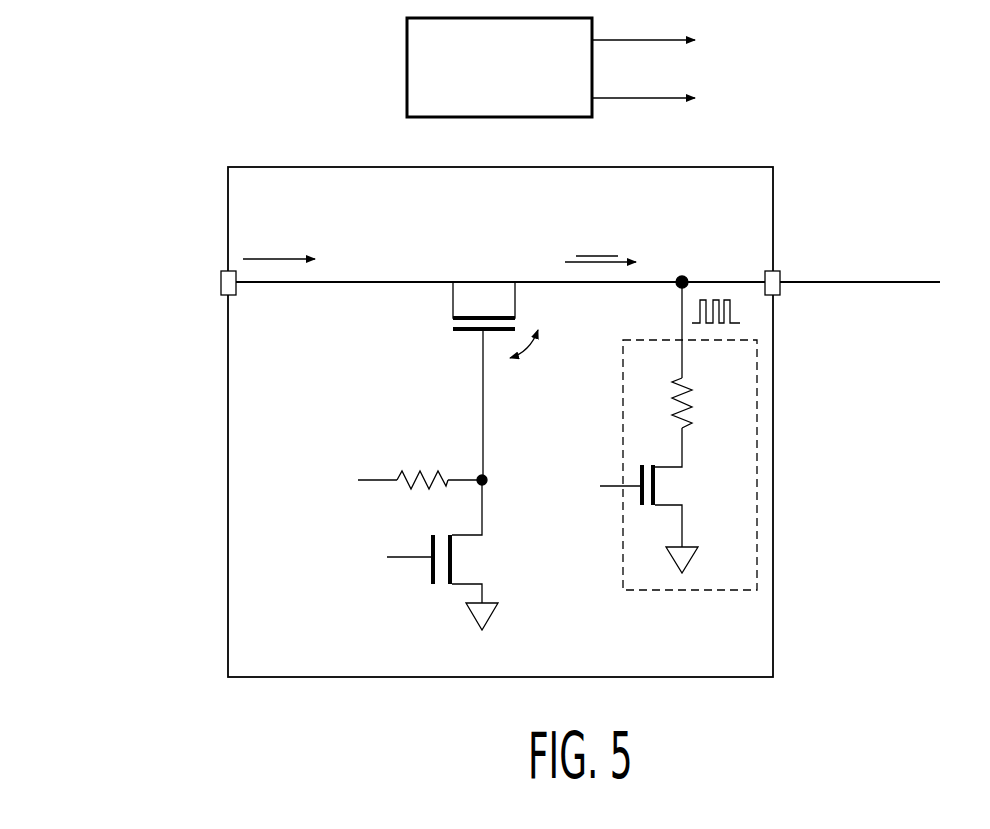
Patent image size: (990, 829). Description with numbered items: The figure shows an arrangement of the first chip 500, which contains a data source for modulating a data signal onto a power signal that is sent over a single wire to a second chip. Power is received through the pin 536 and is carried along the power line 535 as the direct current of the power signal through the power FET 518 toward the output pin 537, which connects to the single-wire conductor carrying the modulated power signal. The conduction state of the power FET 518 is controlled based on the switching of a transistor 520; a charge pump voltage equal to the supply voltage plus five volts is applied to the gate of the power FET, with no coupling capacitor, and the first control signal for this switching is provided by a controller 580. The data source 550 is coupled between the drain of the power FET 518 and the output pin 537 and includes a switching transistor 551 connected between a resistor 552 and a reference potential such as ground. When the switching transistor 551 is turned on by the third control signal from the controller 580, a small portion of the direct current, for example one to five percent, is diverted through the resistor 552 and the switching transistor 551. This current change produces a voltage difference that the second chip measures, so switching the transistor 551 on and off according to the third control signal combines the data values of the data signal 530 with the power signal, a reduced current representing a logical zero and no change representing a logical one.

The first chip 500 is at (283, 165).
The controller 580 is at (407, 56).
The power line 535 is at (325, 280).
The pin 536 is at (221, 278).
The output pin 537 is at (778, 293).
The power FET 518 is at (453, 300).
The data signal 530 is at (681, 306).
The data source 550 is at (853, 281).
The resistor 552 is at (695, 399).
The switching transistor 551 is at (660, 489).
The transistor 520 is at (433, 575).